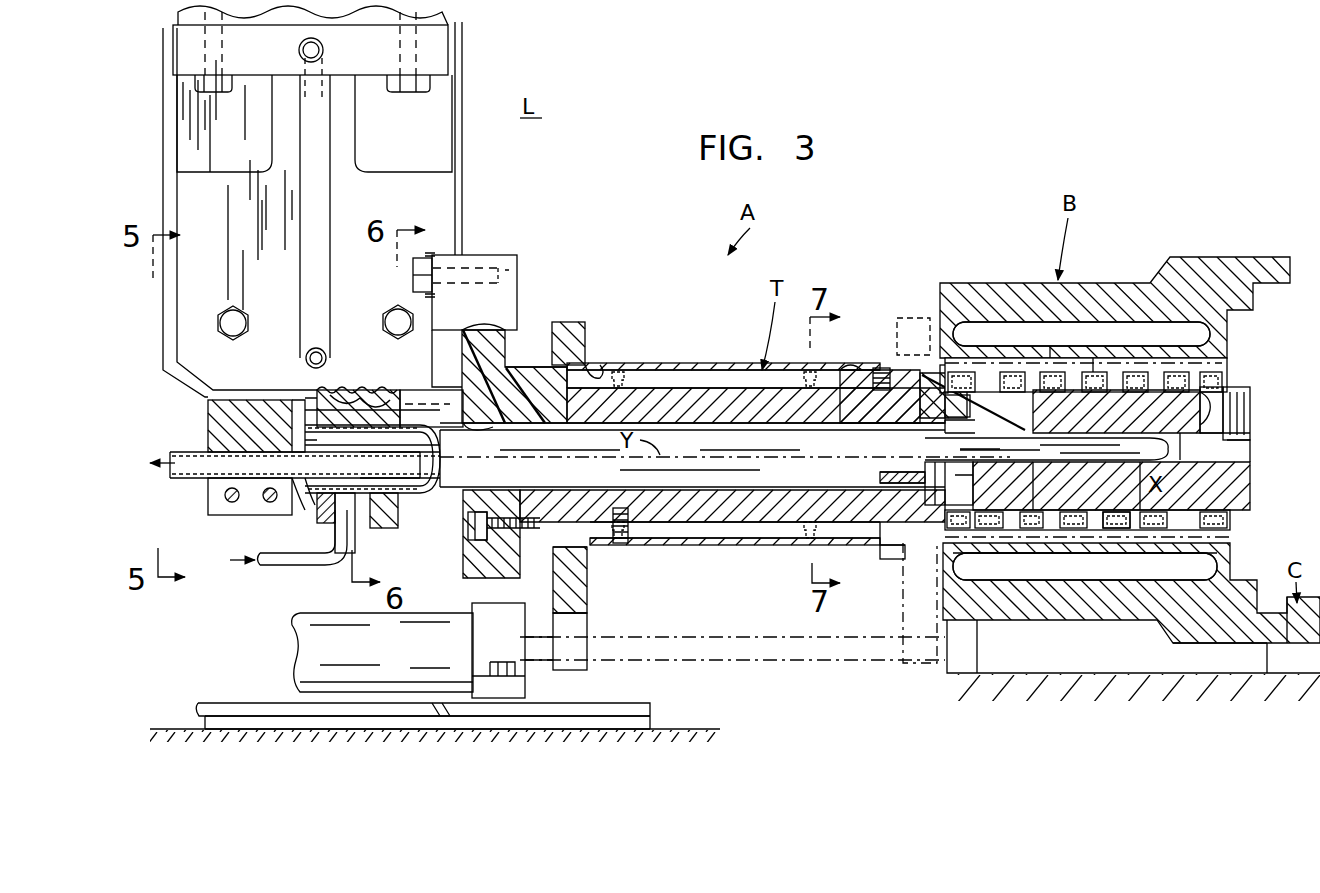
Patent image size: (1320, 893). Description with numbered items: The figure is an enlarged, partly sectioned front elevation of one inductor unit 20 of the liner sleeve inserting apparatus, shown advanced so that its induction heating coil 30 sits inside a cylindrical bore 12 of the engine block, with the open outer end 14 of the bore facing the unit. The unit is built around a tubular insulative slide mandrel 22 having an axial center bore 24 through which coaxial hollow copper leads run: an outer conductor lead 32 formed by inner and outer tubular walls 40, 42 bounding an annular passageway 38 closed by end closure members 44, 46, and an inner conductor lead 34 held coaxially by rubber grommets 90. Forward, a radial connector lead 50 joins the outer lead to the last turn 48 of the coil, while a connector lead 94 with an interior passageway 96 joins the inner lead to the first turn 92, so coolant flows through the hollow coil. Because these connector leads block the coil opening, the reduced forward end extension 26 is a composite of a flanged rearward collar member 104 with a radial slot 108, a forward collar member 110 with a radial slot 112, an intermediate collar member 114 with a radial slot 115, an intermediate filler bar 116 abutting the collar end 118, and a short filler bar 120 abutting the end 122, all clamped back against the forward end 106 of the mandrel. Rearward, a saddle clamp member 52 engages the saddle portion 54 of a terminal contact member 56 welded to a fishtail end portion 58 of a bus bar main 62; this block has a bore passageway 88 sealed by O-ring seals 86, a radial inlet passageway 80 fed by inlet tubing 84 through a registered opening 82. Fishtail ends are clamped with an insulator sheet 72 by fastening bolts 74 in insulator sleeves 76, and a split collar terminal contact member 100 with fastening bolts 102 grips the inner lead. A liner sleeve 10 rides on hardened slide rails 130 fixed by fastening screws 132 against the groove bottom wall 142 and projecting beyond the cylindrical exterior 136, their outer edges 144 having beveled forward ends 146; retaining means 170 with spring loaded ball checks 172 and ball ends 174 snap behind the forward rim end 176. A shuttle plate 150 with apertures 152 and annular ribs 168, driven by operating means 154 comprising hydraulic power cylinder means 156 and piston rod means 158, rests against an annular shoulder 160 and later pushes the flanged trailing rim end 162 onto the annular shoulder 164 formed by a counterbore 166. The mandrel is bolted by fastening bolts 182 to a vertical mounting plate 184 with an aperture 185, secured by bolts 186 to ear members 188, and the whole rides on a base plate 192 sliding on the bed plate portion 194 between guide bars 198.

The liner sleeve 10 is at (752, 366).
The cylindrical bore 12 is at (1125, 362).
The open outer end 14 is at (914, 332).
The inductor unit 20 is at (530, 362).
The slide mandrel 22 is at (682, 392).
The axial center bore 24 is at (740, 427).
The forward end extension 26 is at (1255, 470).
The induction heating coil 30 is at (1118, 545).
The outer conductor lead 32 is at (452, 497).
The inner conductor lead 34 is at (195, 480).
The annular passageway 38 is at (407, 493).
The inner tubular wall 40 is at (437, 442).
The outer tubular wall 42 is at (400, 425).
The annular end closure member 44 is at (313, 513).
The annular end closure member 46 is at (972, 428).
The last turn 48 is at (957, 530).
The connector conductor lead 50 is at (940, 508).
The saddle-type clamp member 52 is at (400, 503).
The saddle portion 54 is at (410, 407).
The terminal contact member 56 is at (307, 407).
The fishtail end portion 58 is at (440, 188).
The bus bar main 62 is at (180, 15).
The plastic insulator sheet 72 is at (175, 299).
The fastening bolt 74 is at (232, 310).
The collared plastic insulator sleeve 76 is at (215, 333).
The radial inlet passageway 80 is at (357, 505).
The registered opening 82 is at (342, 515).
The inlet tubing 84 is at (292, 568).
The O-ring seal 86 is at (347, 412).
The bore passageway 88 is at (382, 413).
The grommet 90 is at (313, 412).
The first turn 92 is at (1217, 370).
The connector conductor lead 94 is at (1220, 397).
The interior passageway 96 is at (1243, 432).
The terminal contact member 100 is at (212, 421).
The fastening bolt 102 is at (270, 503).
The rearward collar member 104 is at (983, 395).
The forward end 106 is at (945, 420).
The radial slot 108 is at (1013, 520).
The forward collar member 110 is at (1253, 495).
The radial slot 112 is at (1160, 390).
The intermediate collar member 114 is at (1117, 530).
The radial slot 115 is at (1108, 390).
The intermediate filler bar 116 is at (1112, 390).
The collar end 118 is at (1045, 395).
The short filler bar 120 is at (1030, 500).
The end 122 is at (1020, 520).
The slide rail 130 is at (712, 375).
The fastening screw 132 is at (625, 540).
The cylindrical exterior 136 is at (852, 368).
The bottom wall 142 is at (713, 527).
The outer edge 144 is at (648, 366).
The beveled forward end 146 is at (828, 545).
The shuttle plate 150 is at (597, 592).
The aperture 152 is at (598, 372).
The operating means 154 is at (545, 677).
The hydraulic power cylinder means 156 is at (303, 637).
The piston rod means 158 is at (542, 643).
The annular shoulder 160 is at (553, 572).
The flanged trailing rim end 162 is at (598, 553).
The annular shoulder 164 is at (921, 603).
The counterbore 166 is at (943, 360).
The annular rib 168 is at (592, 362).
The retaining means 170 is at (880, 365).
The spring loaded ball check 172 is at (862, 418).
The ball end 174 is at (895, 340).
The forward rim end 176 is at (884, 550).
The fastening bolt 182 is at (483, 558).
The vertical mounting plate 184 is at (508, 275).
The aperture 185 is at (493, 427).
The bolt 186 is at (413, 278).
The ear member 188 is at (448, 290).
The base plate 192 is at (218, 708).
The bed plate portion 194 is at (685, 725).
The guide bar 198 is at (257, 720).